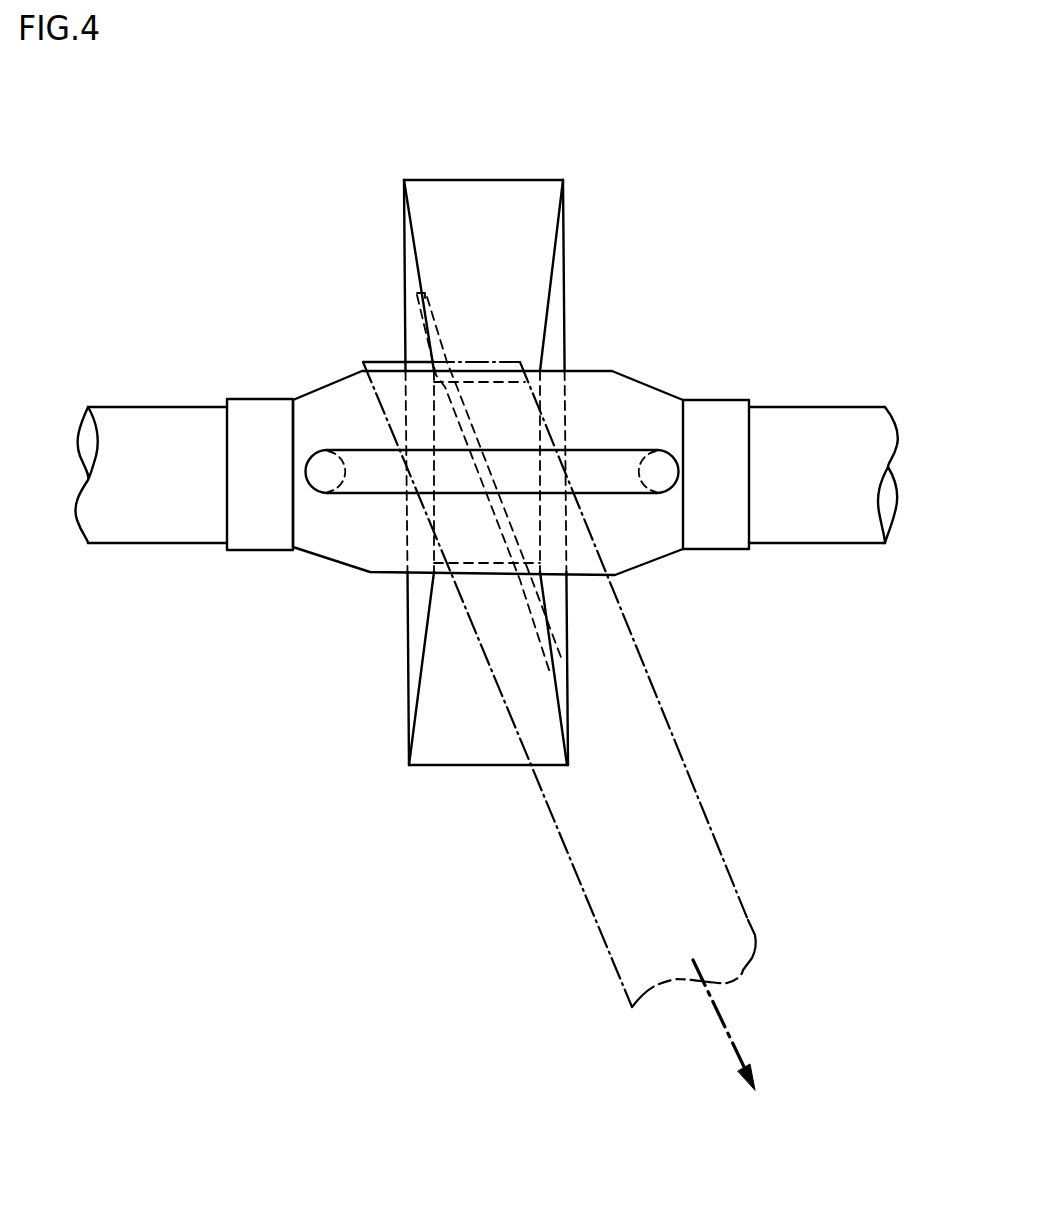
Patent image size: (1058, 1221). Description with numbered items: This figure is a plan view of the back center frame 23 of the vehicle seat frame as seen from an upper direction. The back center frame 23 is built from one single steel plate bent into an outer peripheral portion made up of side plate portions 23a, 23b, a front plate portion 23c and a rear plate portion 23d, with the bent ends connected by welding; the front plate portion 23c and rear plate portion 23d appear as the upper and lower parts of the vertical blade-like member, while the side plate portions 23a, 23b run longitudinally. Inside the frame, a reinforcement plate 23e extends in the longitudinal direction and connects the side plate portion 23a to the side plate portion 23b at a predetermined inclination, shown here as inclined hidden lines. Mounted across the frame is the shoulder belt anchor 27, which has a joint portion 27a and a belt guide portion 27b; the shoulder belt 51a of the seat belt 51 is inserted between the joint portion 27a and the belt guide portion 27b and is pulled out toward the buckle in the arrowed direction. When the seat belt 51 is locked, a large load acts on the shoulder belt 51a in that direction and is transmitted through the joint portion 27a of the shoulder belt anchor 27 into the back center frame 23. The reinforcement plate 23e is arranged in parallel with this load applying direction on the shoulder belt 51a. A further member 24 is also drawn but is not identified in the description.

The back center frame 23 is at (475, 468).
The side plate portion 23a is at (413, 343).
The side plate portion 23b is at (543, 345).
The front plate portion 23c is at (468, 753).
The rear plate portion 23d is at (478, 205).
The reinforcement plate 23e is at (530, 598).
The shaft 24 is at (138, 442).
The shoulder belt anchor 27 is at (534, 437).
The joint portion 27a is at (617, 405).
The belt guide portion 27b is at (598, 462).
The shoulder belt 51a is at (576, 726).
The seat belt 51 is at (724, 1025).